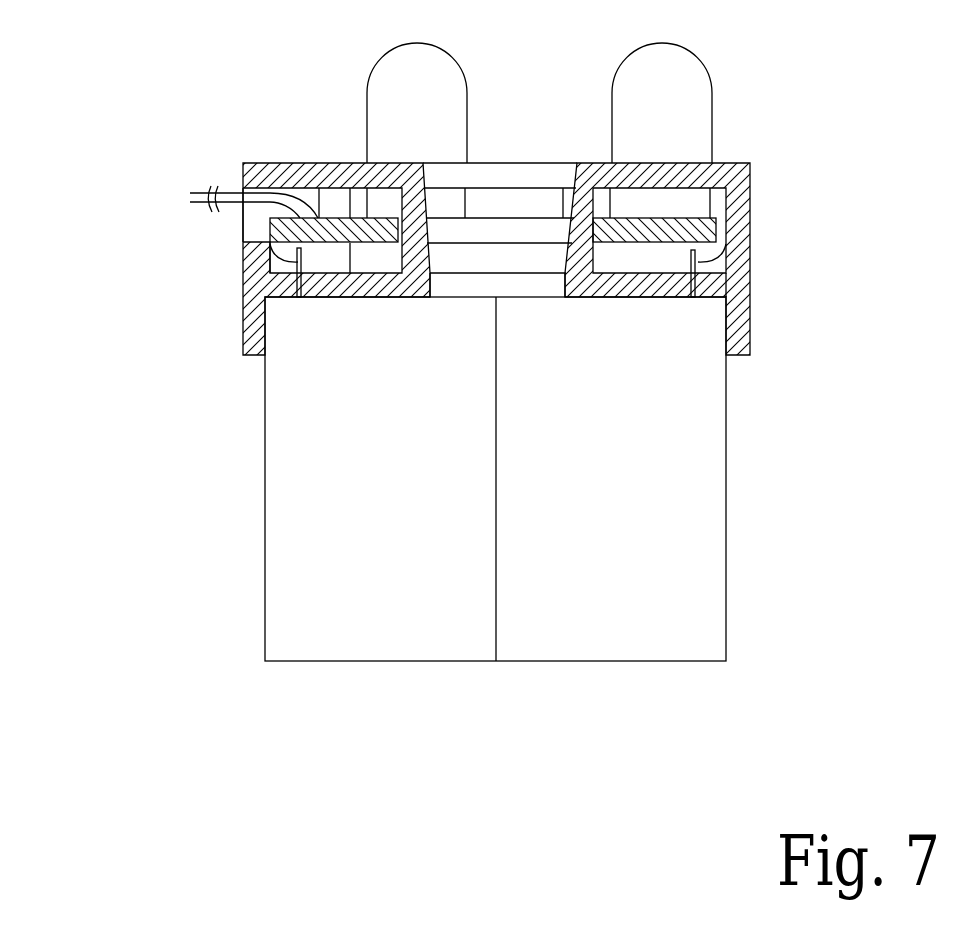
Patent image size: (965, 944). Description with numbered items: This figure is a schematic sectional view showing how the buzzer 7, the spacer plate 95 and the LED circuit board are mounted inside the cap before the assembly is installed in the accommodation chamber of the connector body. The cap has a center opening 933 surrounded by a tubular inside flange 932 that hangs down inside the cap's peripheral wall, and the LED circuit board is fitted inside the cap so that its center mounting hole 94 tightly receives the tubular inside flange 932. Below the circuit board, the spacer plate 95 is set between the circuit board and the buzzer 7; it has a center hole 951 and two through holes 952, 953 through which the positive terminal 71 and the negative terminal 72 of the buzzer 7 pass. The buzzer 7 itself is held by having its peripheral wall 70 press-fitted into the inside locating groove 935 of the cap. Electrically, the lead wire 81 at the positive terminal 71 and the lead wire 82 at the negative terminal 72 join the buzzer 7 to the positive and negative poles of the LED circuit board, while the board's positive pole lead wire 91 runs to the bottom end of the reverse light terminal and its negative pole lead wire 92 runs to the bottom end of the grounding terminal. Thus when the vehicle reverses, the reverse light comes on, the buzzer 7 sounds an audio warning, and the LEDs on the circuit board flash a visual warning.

The buzzer 7 is at (563, 352).
The peripheral wall 70 is at (266, 333).
The positive terminal 71 is at (300, 278).
The negative terminal 72 is at (692, 294).
The lead wire 81 is at (286, 254).
The lead wire 82 is at (704, 256).
The positive pole lead wire 91 is at (232, 204).
The negative pole lead wire 92 is at (238, 193).
The tubular inside flange 932 is at (593, 262).
The center opening 933 is at (431, 258).
The inside locating groove 935 is at (285, 285).
The center mounting hole 94 is at (593, 233).
The spacer plate 95 is at (600, 297).
The center hole 951 is at (566, 275).
The through hole 952 is at (270, 275).
The through hole 953 is at (698, 291).